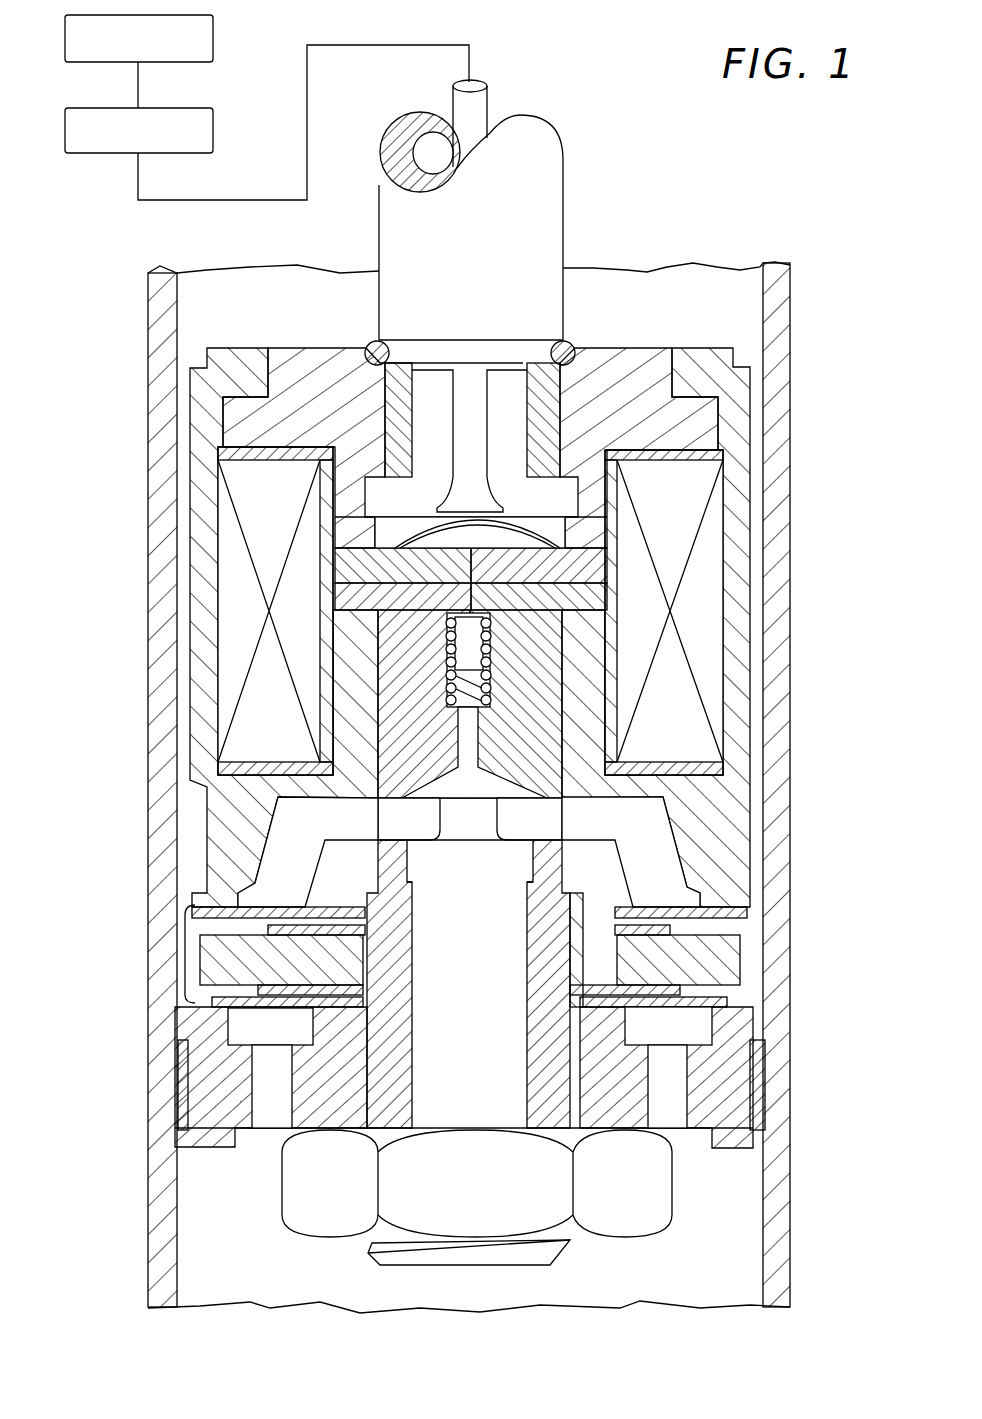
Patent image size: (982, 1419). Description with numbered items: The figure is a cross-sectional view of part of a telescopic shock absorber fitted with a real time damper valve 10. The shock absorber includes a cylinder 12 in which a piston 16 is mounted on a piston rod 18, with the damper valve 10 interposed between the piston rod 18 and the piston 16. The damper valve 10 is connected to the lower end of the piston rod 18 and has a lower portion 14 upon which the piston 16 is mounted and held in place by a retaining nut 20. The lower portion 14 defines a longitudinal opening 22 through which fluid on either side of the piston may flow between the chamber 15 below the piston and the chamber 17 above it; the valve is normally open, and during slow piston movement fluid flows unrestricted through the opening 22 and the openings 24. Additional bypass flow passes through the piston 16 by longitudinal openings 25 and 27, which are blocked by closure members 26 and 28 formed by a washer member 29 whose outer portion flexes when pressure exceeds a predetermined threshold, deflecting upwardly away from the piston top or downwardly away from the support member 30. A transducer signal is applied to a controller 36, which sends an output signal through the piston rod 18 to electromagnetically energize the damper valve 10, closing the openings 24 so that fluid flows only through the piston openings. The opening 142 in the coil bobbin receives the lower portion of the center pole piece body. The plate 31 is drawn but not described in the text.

The real time damper valve 10 is at (245, 330).
The cylinder 12 is at (147, 543).
The lower portion 14 is at (395, 1015).
The chamber 15 is at (469, 1282).
The piston 16 is at (750, 910).
The chamber 17 is at (165, 460).
The piston rod 18 is at (563, 203).
The retaining nut 20 is at (335, 1225).
The longitudinal opening 22 is at (490, 1258).
The openings 24 is at (265, 848).
The longitudinal opening 25 is at (268, 1128).
The closure member 26 is at (200, 1012).
The longitudinal opening 27 is at (673, 1125).
The closure member 28 is at (727, 1007).
The washer member 29 is at (300, 1008).
The support member 30 is at (725, 995).
The spacer plate 31 is at (185, 948).
The controller 36 is at (213, 130).
The opening 142 is at (330, 405).